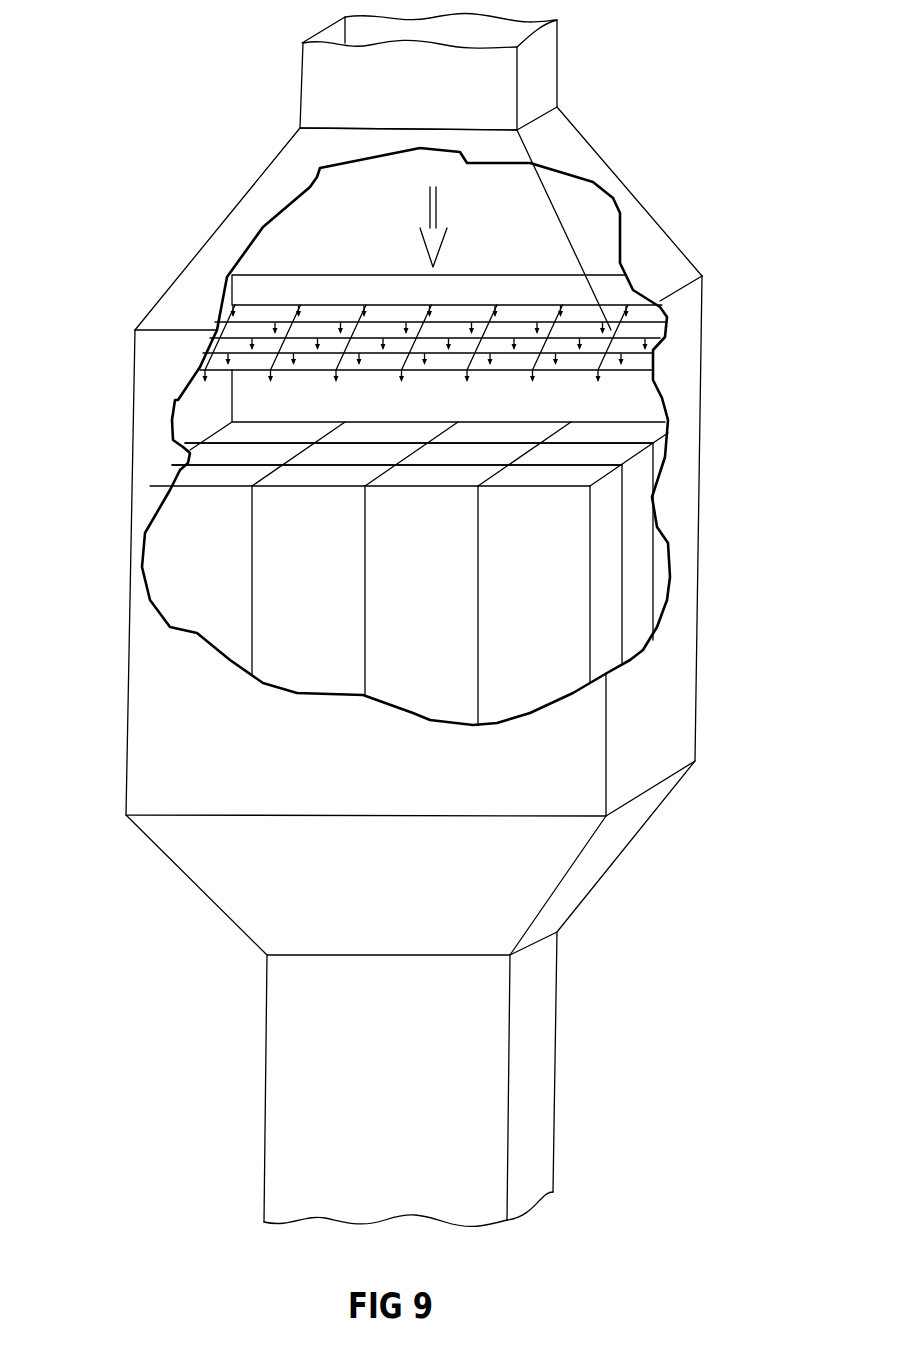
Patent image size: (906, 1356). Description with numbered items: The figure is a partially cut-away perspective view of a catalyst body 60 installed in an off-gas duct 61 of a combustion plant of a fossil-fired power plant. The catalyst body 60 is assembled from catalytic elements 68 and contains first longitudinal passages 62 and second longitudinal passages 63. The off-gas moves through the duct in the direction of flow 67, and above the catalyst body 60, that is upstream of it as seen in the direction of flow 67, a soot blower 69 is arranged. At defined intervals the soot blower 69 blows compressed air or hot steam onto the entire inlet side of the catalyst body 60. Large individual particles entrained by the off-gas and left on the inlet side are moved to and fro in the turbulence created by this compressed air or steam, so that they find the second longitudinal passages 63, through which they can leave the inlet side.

The catalyst body 60 is at (637, 583).
The off-gas duct 61 is at (583, 162).
The first longitudinal passages 62 is at (377, 457).
The second longitudinal passages 63 is at (377, 457).
The direction of flow 67 is at (440, 197).
The catalytic elements 68 is at (298, 640).
The soot blower 69 is at (597, 377).